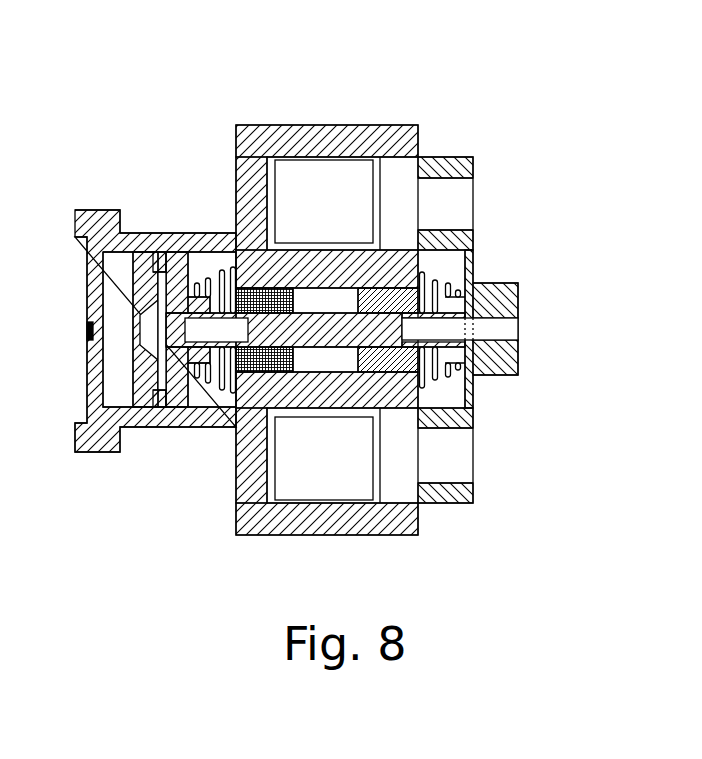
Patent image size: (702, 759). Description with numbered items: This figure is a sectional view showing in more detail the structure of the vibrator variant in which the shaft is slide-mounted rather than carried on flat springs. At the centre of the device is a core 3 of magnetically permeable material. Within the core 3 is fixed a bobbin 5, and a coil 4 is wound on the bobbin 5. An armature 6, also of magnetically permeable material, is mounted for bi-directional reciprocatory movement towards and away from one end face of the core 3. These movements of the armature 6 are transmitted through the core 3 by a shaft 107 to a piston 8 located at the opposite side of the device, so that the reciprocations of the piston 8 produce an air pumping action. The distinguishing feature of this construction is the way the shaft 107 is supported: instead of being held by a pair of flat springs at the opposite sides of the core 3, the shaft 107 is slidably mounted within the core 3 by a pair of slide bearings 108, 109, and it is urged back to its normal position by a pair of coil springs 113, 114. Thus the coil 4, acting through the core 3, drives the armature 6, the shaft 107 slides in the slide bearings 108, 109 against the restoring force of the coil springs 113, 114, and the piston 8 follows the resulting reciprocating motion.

The core 3 is at (410, 122).
The coil 4 is at (340, 187).
The bobbin 5 is at (268, 188).
The armature 6 is at (478, 148).
The piston 8 is at (143, 392).
The shaft 107 is at (323, 335).
The slide bearing 108 is at (270, 367).
The slide bearing 109 is at (391, 360).
The coil spring 113 is at (228, 278).
The coil spring 114 is at (437, 278).